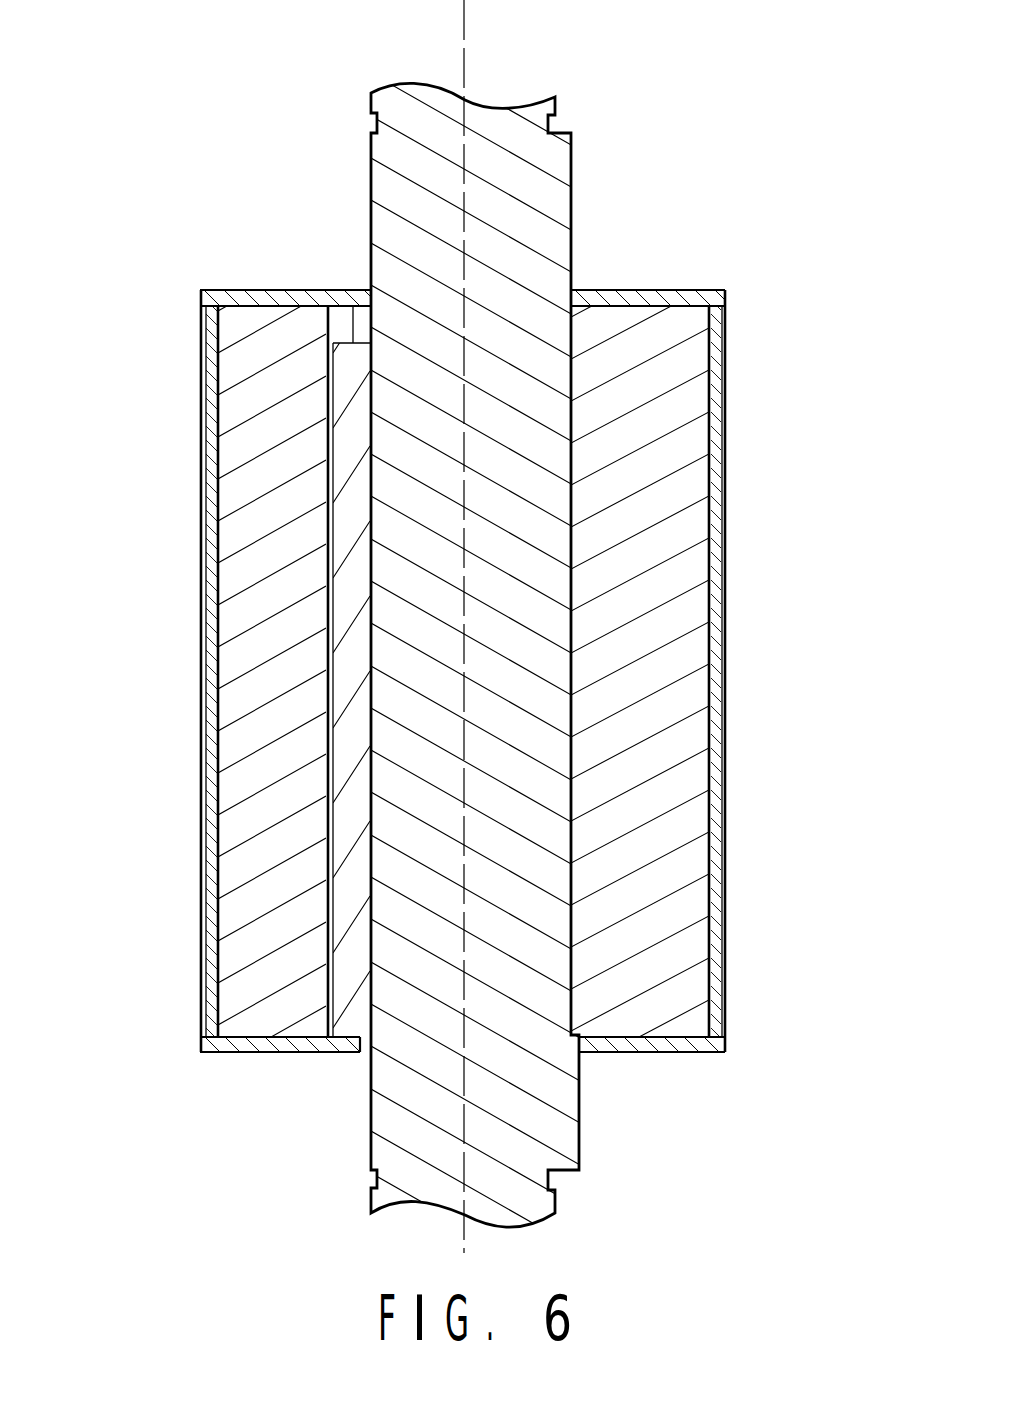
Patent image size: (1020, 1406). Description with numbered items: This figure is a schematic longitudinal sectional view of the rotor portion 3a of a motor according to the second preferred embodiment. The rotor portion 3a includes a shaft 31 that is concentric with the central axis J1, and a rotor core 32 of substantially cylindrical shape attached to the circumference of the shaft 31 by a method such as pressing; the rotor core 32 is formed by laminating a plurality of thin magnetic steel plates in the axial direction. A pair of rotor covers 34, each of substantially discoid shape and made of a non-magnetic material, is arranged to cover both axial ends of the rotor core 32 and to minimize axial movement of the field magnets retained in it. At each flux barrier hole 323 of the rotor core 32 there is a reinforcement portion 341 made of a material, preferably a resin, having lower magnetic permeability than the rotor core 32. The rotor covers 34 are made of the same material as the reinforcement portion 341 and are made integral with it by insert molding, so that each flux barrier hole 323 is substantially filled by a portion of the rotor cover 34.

The rotor portion 3a is at (165, 111).
The central axis J1 is at (464, 53).
The shaft 31 is at (507, 253).
The rotor core 32 is at (278, 716).
The flux barrier hole 323 is at (188, 540).
The rotor cover 34 is at (237, 294).
The reinforcement portion 341 is at (213, 450).